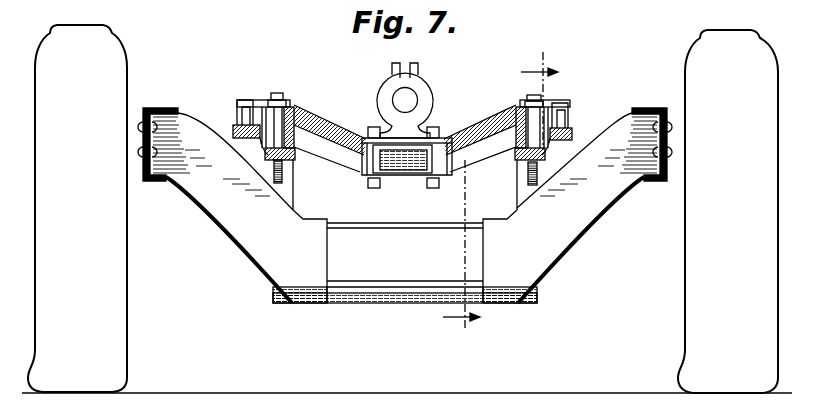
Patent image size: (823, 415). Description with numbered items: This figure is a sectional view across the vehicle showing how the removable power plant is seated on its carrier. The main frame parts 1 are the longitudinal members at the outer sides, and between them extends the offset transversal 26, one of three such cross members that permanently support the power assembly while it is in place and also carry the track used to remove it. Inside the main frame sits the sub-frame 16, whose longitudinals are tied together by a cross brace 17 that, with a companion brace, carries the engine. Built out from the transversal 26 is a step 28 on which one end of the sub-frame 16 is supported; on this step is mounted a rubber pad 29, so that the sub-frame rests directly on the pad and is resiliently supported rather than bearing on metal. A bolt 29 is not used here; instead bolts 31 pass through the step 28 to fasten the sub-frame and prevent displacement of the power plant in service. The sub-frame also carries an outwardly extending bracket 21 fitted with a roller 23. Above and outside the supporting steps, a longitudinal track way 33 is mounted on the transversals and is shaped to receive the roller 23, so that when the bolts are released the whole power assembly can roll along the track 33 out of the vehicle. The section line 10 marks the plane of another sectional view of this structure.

The main frame part 1 is at (153, 107).
The section line 10- 10 is at (500, 196).
The sub-frame 16 is at (292, 104).
The cross brace 17 is at (337, 137).
The outwardly extending bracket 21 is at (262, 101).
The roller 23 is at (244, 107).
The offset transversal 26 is at (560, 228).
The step 28 is at (295, 186).
The rubber pad 29 is at (286, 172).
The bolt 31 is at (283, 140).
The longitudinal track way 33 is at (225, 150).